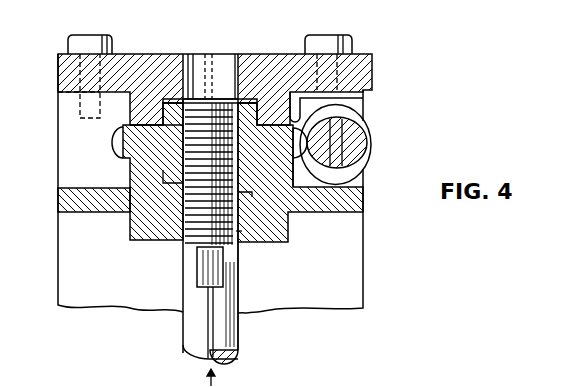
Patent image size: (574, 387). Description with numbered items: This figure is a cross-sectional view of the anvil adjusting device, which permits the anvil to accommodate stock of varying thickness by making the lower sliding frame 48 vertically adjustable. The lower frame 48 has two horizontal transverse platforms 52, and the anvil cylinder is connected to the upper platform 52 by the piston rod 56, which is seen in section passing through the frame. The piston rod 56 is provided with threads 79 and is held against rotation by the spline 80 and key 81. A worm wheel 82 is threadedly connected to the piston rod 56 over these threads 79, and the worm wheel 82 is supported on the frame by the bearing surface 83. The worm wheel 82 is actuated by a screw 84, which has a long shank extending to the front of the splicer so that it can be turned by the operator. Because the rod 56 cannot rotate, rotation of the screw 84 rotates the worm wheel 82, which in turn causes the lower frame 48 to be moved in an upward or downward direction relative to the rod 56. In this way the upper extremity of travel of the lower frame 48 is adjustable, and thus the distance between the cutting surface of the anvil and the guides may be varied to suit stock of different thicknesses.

The lower sliding frame 48 is at (72, 259).
The horizontal transverse platform 52 is at (77, 118).
The piston rod 56 is at (195, 318).
The threads 79 is at (200, 226).
The spline 80 is at (238, 238).
The key 81 is at (242, 218).
The worm wheel 82 is at (137, 140).
The bearing surface 83 is at (147, 123).
The screw 84 is at (358, 133).